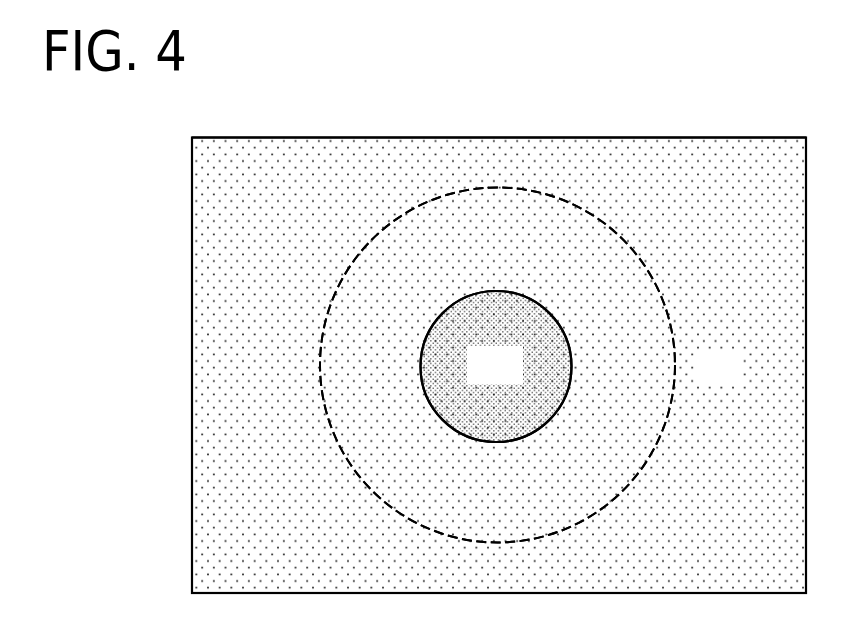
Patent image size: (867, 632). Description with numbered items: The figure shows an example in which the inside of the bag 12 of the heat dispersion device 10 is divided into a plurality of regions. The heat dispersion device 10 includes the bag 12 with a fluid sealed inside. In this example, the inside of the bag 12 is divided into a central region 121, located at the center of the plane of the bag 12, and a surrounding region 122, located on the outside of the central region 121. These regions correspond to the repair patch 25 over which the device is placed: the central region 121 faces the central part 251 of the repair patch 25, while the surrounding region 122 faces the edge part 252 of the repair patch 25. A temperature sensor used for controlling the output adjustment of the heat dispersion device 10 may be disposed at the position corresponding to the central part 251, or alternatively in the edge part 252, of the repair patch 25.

The heat dispersion device 10 is at (708, 138).
The bag 12 is at (600, 138).
The repair patch 25 is at (468, 187).
The central region 121 is at (513, 378).
The surrounding region 122 is at (736, 378).
The central part 251 is at (441, 353).
The edge part 252 is at (315, 358).